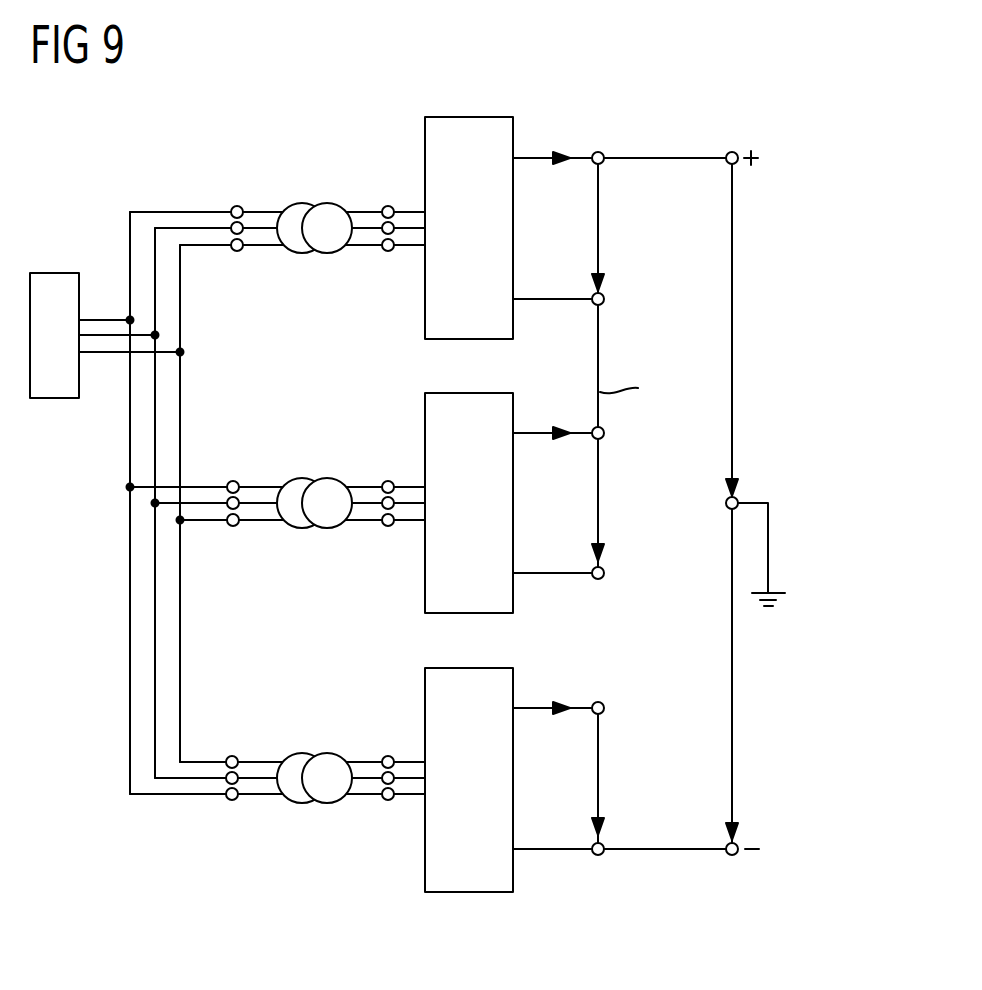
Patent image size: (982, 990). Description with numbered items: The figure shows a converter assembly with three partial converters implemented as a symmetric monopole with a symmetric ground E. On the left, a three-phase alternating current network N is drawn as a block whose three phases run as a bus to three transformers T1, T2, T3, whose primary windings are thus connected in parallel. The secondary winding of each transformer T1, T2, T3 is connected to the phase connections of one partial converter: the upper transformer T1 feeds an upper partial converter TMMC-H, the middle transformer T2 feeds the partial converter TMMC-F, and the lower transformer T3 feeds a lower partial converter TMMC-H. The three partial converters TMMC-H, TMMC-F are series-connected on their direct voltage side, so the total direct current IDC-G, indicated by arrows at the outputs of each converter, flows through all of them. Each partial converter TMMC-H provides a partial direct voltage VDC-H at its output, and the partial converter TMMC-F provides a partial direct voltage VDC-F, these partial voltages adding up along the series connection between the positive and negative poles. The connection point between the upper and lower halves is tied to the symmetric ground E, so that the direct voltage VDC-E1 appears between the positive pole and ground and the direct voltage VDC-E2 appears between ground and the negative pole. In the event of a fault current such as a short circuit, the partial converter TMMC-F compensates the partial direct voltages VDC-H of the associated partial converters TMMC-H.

The three-phase alternating current network N is at (56, 271).
The transformer T1 is at (303, 203).
The transformer T2 is at (302, 478).
The transformer T3 is at (302, 753).
The partial converter TMMC-H is at (473, 117).
The partial converter TMMC-F is at (465, 393).
The total direct current IDC-G is at (561, 152).
The partial direct voltage VDC-H is at (600, 222).
The partial direct voltage VDC-F is at (600, 472).
The direct voltage VDC-E1 is at (733, 287).
The direct voltage VDC-E2 is at (733, 705).
The symmetric ground E is at (776, 592).